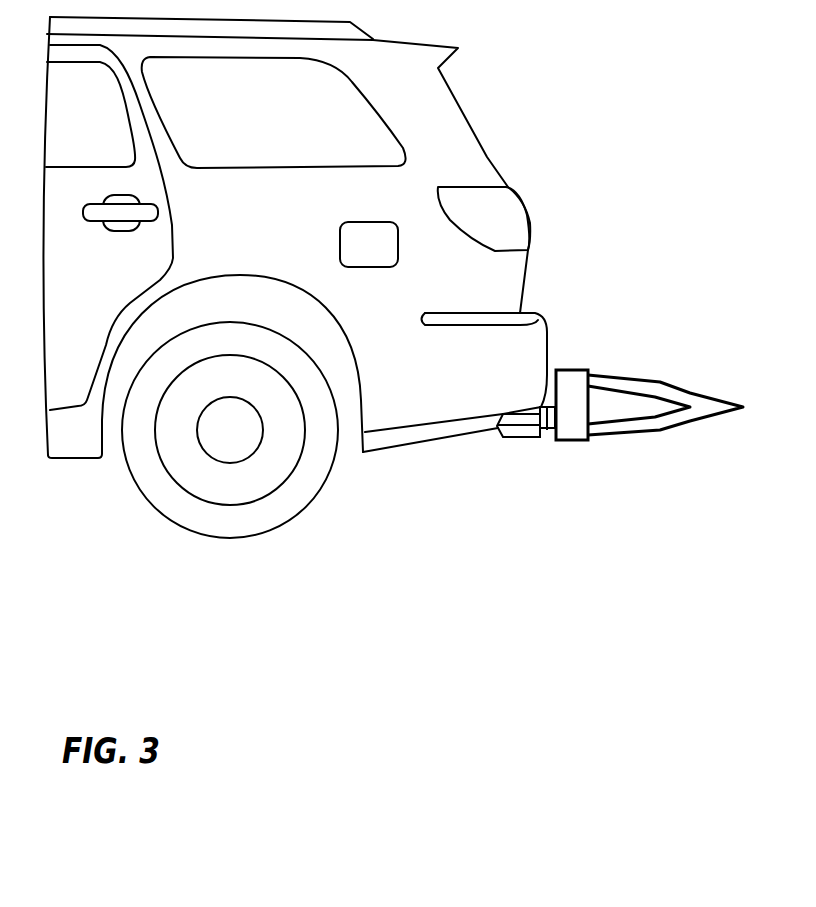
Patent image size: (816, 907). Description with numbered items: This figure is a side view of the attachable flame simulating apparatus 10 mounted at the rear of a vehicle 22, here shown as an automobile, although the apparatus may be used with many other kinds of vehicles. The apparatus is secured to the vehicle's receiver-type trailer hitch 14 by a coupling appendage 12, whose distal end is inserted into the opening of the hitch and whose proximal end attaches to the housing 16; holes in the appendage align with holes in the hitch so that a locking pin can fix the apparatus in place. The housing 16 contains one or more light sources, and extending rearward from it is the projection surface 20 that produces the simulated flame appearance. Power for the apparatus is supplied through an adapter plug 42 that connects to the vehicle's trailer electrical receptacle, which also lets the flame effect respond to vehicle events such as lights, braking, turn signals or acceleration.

The attachable flame simulating apparatus 10 is at (649, 379).
The coupling appendage 12 is at (545, 407).
The receiver-type trailer hitch 14 is at (527, 440).
The housing 16 is at (572, 440).
The projection surface 20 is at (631, 378).
The vehicle 22 is at (425, 118).
The adapter plug 42 is at (547, 428).